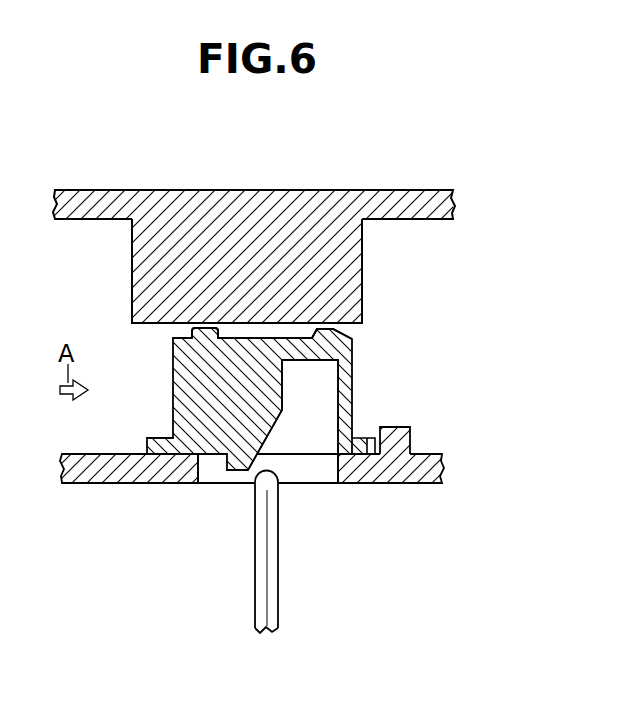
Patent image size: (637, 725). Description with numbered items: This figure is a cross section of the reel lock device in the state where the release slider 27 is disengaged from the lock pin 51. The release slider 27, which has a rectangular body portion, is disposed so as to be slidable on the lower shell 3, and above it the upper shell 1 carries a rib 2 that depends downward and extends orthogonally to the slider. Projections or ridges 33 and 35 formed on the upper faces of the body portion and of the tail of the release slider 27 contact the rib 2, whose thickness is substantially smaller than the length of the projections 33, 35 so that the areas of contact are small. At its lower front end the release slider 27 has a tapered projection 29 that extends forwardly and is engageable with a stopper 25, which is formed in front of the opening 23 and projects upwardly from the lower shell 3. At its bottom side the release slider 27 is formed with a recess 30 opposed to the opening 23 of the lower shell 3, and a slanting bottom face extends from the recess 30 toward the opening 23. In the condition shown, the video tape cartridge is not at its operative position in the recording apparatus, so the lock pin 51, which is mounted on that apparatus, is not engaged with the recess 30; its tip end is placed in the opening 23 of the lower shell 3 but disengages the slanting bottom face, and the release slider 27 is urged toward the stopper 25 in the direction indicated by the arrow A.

The upper shell 1 is at (378, 190).
The rib 2 is at (363, 262).
The lower shell 3 is at (100, 486).
The opening 23 is at (308, 473).
The stopper 25 is at (412, 432).
The release slider 27 is at (173, 395).
The tapered projection 29 is at (365, 438).
The recess 30 is at (334, 384).
The projection 33 is at (335, 334).
The projection 35 is at (192, 331).
The lock pin 51 is at (253, 570).